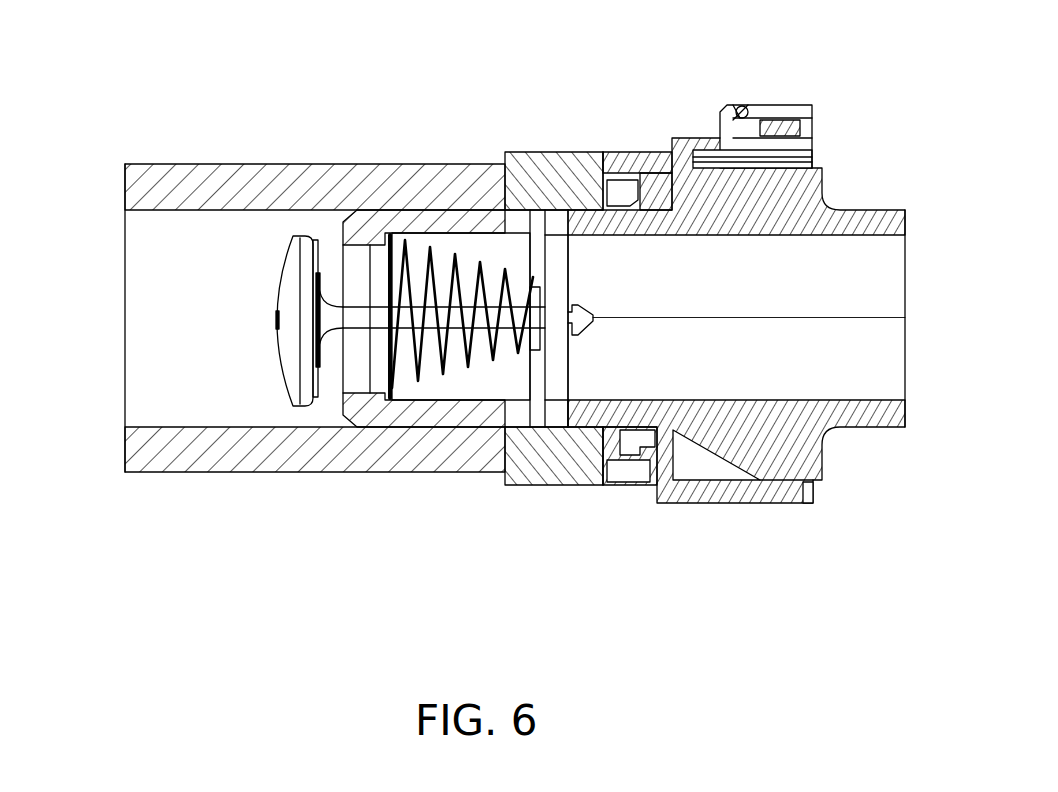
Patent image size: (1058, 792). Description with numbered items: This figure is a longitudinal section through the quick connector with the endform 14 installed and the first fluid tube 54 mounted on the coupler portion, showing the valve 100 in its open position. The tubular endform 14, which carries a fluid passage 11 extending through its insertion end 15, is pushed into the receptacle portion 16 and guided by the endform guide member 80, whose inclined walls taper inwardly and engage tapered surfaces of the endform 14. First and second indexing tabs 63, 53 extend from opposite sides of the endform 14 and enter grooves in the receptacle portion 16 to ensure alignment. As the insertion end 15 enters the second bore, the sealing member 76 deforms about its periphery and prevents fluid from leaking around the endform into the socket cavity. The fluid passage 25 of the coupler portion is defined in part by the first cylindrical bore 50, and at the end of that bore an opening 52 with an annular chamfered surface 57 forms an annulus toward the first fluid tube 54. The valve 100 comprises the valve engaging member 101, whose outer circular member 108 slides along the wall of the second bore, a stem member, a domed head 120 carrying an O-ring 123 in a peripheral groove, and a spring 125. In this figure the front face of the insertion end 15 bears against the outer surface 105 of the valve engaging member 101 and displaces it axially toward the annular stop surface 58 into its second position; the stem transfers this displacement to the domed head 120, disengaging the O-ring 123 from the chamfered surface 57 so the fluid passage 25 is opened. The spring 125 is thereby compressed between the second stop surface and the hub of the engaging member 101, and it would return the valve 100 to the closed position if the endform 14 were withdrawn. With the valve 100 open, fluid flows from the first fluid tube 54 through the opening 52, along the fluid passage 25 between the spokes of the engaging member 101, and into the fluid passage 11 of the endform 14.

The valve 100 is at (318, 309).
The first fluid tube 54 is at (195, 164).
The O-ring 123 is at (302, 237).
The opening 52 is at (331, 242).
The spring 125 is at (427, 238).
The annular stop surface 58 is at (548, 228).
The outer circular member 108 is at (550, 228).
The outer surface 105 is at (572, 275).
The first indexing tab 63 is at (805, 188).
The endform 14 is at (868, 218).
The fluid passage 11 is at (876, 278).
The second indexing tab 53 is at (797, 458).
The receptacle portion 16 is at (774, 480).
The endform guide member 80 is at (713, 453).
The sealing member 76 is at (637, 427).
The insertion end 15 is at (585, 413).
The valve engaging member 101 is at (562, 432).
The first cylindrical bore 50 is at (483, 405).
The fluid passage 25 is at (427, 393).
The chamfered surface 57 is at (357, 378).
The domed head 120 is at (293, 363).